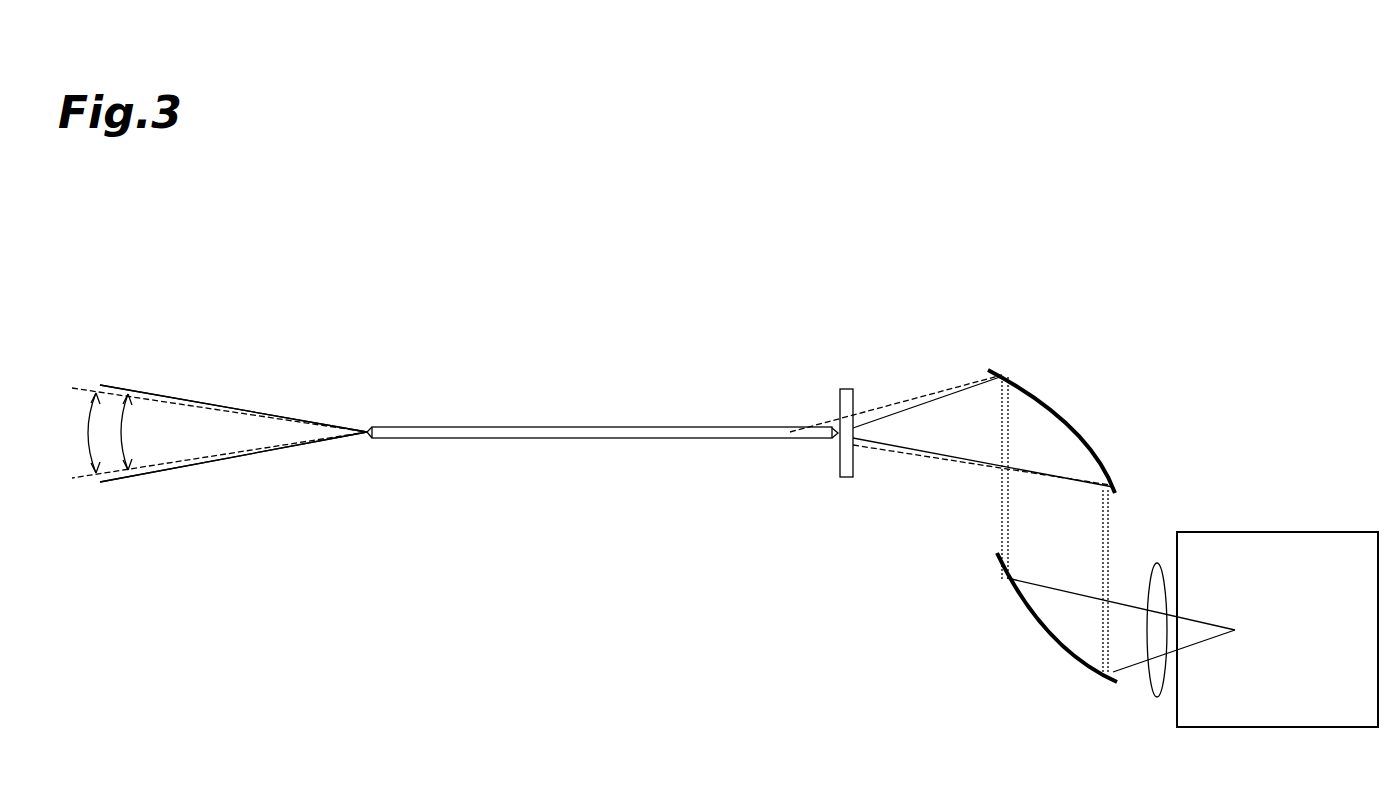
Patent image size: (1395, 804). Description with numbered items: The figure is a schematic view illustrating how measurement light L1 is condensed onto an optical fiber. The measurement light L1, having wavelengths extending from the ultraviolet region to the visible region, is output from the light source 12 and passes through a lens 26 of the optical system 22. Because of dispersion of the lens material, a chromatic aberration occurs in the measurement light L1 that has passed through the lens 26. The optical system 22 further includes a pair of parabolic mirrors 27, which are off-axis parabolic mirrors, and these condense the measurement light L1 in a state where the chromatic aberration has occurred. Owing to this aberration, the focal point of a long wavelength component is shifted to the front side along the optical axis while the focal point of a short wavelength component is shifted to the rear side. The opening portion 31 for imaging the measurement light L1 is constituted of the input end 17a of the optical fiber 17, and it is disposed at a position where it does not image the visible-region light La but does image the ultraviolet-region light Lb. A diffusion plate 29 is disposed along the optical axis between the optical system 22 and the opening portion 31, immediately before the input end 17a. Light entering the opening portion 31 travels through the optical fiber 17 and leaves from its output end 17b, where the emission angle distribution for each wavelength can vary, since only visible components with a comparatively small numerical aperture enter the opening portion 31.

The light source 12 is at (1283, 532).
The optical fiber 17 is at (580, 427).
The input end 17a is at (796, 488).
The opening portion 31 is at (837, 434).
The output end 17b is at (367, 436).
The optical system 22 is at (1061, 529).
The lens 26 is at (1157, 563).
The parabolic mirror 27 is at (1058, 405).
The diffusion plate 29 is at (845, 388).
The measurement light L1 is at (931, 378).
The light having a wavelength in the visible region La is at (183, 463).
The light having a wavelength in the ultraviolet region Lb is at (207, 402).